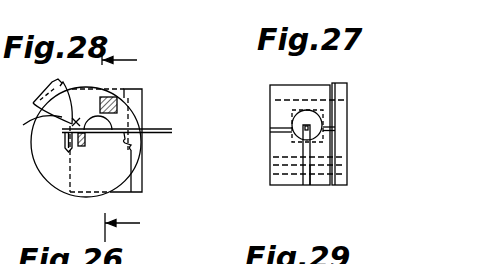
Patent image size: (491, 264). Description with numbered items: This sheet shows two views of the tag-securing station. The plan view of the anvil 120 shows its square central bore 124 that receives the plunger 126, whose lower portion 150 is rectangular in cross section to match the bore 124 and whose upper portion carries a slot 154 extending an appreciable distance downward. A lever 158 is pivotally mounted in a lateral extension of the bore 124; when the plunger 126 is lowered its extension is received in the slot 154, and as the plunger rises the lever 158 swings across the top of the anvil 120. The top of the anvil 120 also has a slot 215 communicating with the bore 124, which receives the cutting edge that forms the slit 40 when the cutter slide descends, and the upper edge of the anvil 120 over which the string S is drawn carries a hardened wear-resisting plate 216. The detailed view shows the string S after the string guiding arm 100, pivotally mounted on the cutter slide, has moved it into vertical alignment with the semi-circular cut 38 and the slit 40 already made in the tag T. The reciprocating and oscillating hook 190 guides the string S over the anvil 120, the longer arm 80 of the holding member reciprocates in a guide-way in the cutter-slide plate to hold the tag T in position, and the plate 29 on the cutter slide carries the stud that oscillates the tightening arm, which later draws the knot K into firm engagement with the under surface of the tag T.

In FIG. 28, the plate 29 is at (121, 143).
In FIG. 28, the tag T is at (58, 183).
In FIG. 28, the knot K is at (62, 117).
In FIG. 28, the string S is at (165, 128).
In FIG. 28, the semi-circular cut 38 is at (88, 118).
In FIG. 28, the hook 190 is at (42, 100).
In FIG. 28, the anvil 120 is at (118, 90).
In FIG. 27, the anvil 120 is at (327, 82).
In FIG. 28, the arm 80 is at (112, 104).
In FIG. 28, the slit 40 is at (130, 147).
In FIG. 28, the string guiding arm 100 is at (85, 147).
In FIG. 28, the plate 216 is at (133, 180).
In FIG. 27, the plate 216 is at (340, 143).
In FIG. 27, the central bore 124 is at (273, 131).
In FIG. 27, the plunger 126 is at (315, 125).
In FIG. 27, the lower portion 150 is at (348, 167).
In FIG. 27, the slot 154 is at (302, 137).
In FIG. 27, the lever 158 is at (308, 170).
In FIG. 27, the slot 215 is at (325, 128).